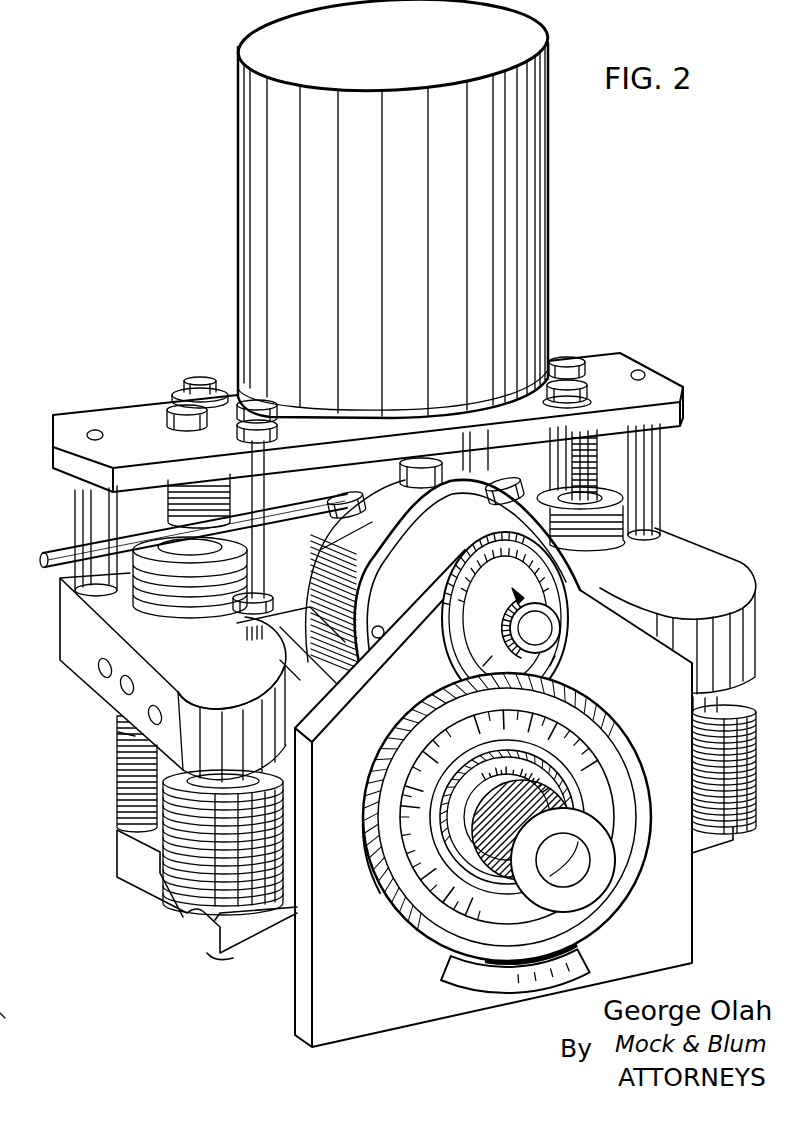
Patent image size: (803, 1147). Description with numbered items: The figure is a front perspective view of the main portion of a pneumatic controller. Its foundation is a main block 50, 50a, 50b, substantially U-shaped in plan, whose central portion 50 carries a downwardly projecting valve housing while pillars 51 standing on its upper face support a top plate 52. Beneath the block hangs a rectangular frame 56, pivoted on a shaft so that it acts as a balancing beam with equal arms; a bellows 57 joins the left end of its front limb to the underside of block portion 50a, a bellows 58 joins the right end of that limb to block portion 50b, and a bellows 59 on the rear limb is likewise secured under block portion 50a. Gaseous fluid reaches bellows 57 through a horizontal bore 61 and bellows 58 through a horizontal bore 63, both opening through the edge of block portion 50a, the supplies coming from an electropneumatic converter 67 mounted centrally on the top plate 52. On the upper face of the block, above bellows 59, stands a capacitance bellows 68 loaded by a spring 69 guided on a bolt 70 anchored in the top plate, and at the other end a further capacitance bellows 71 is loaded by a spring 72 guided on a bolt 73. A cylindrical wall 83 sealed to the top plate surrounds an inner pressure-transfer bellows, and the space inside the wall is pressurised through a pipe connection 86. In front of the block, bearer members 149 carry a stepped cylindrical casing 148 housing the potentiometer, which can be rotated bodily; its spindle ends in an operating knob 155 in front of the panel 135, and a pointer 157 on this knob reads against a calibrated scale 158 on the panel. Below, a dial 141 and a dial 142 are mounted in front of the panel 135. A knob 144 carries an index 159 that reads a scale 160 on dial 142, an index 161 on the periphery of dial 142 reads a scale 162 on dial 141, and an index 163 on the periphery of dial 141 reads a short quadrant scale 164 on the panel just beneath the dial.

The main block central portion 50 is at (100, 612).
The left-hand block portion 50a is at (247, 710).
The right-hand block portion 50b is at (710, 620).
The pillars 51 is at (201, 383).
The top plate 52 is at (672, 379).
The rectangular frame 56 is at (250, 940).
The bellows 57 is at (163, 893).
The bellows 58 is at (755, 763).
The bellows 59 is at (118, 762).
The horizontal bore 61 is at (120, 733).
The horizontal bore 63 is at (122, 690).
The electropneumatic converter 67 is at (550, 213).
The capacitance bellows 68 is at (191, 607).
The loading spring 69 is at (167, 510).
The bolt 70 is at (182, 408).
The capacitance bellows 71 is at (612, 548).
The spring 72 is at (600, 473).
The bolt 73 is at (568, 357).
The cylindrical wall 83 is at (510, 478).
The pipe connection 86 is at (48, 570).
The panel 135 is at (692, 937).
The dial 141 is at (637, 788).
The dial 142 is at (607, 807).
The knob 144 is at (615, 880).
The stepped cylindrical casing 148 is at (448, 552).
The bearer members 149 is at (342, 668).
The operating knob 155 is at (563, 643).
The index or pointer 157 is at (517, 548).
The calibrated scale 158 is at (561, 623).
The index 159 is at (538, 812).
The scale 160 is at (590, 783).
The index 161 is at (400, 773).
The scale 162 is at (407, 850).
The index 163 is at (497, 952).
The short quadrant scale 164 is at (587, 957).